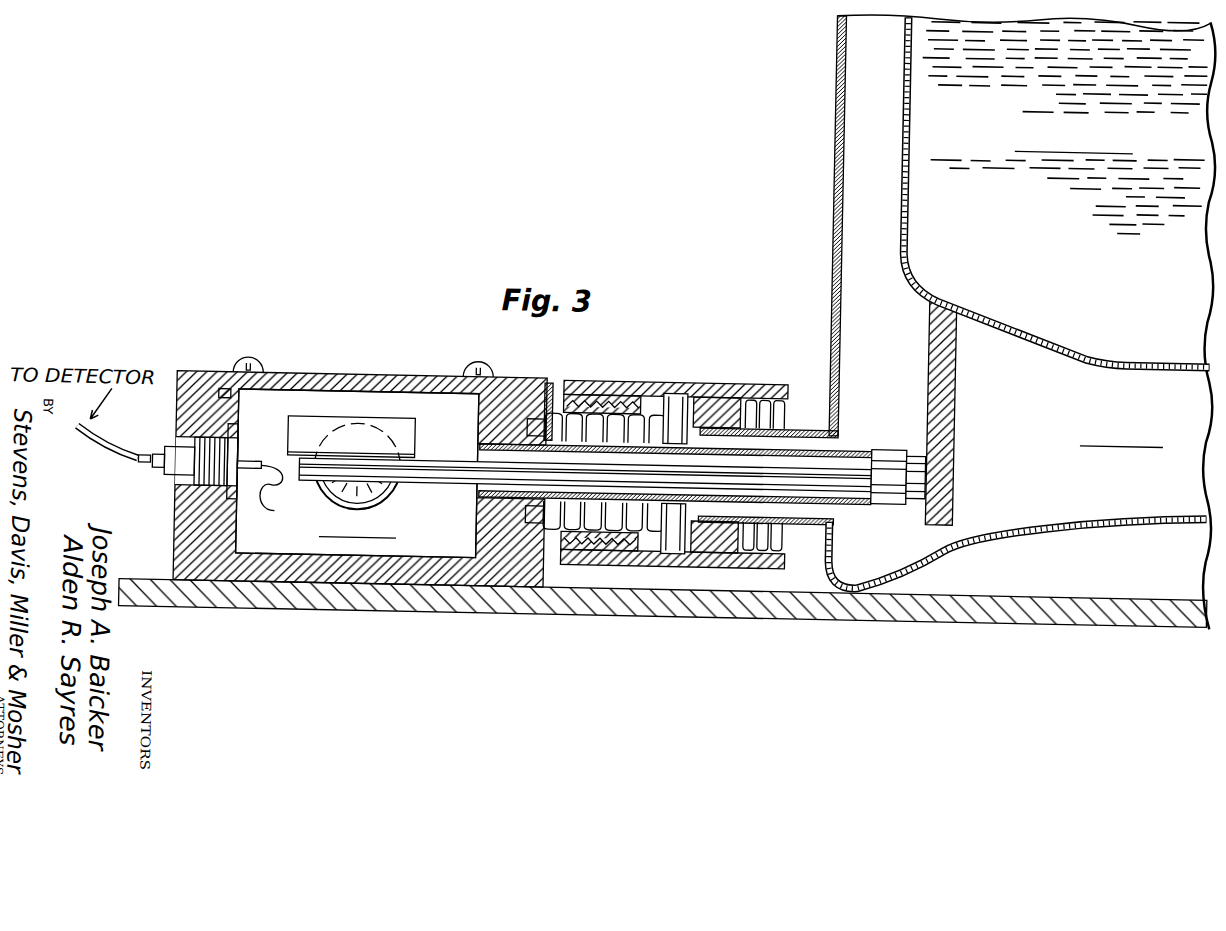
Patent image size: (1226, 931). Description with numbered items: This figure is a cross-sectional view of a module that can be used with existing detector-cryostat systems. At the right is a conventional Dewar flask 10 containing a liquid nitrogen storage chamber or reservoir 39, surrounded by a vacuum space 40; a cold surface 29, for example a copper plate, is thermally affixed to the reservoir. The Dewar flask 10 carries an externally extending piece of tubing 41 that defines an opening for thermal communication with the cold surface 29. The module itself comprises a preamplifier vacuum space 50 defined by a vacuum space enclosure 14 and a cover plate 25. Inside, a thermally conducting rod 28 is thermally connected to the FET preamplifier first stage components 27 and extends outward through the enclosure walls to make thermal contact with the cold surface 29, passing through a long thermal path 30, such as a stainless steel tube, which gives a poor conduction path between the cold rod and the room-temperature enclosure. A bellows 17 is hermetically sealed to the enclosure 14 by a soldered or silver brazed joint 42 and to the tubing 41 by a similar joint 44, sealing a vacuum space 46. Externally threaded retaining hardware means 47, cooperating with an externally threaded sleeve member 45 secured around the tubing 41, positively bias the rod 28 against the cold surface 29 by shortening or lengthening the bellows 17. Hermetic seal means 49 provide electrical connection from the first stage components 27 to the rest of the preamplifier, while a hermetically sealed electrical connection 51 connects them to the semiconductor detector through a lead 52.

The Dewar flask 10 is at (830, 73).
The vacuum space enclosure 14 is at (320, 582).
The bellows 17 is at (665, 542).
The cover plate 25 is at (288, 384).
The FET preamplifier first stage components 27 is at (378, 427).
The thermally conducting rod 28 is at (441, 470).
The cold surface 29 is at (955, 445).
The long thermal path 30 is at (872, 450).
The liquid nitrogen storage chamber 39 is at (897, 152).
The vacuum space 40 is at (1136, 497).
The tubing 41 is at (803, 431).
The soldered or silver brazed joint 42 is at (535, 390).
The soldered or silver brazed joint 44 is at (706, 420).
The externally threaded sleeve member 45 is at (720, 533).
The vacuum space 46 is at (613, 546).
The externally threaded retaining hardware means 47 is at (618, 403).
The hermetic seal means 49 is at (386, 494).
The preamplifier vacuum space 50 is at (462, 550).
The hermetically sealed electrical connection 51 is at (177, 466).
The lead 52 is at (266, 493).